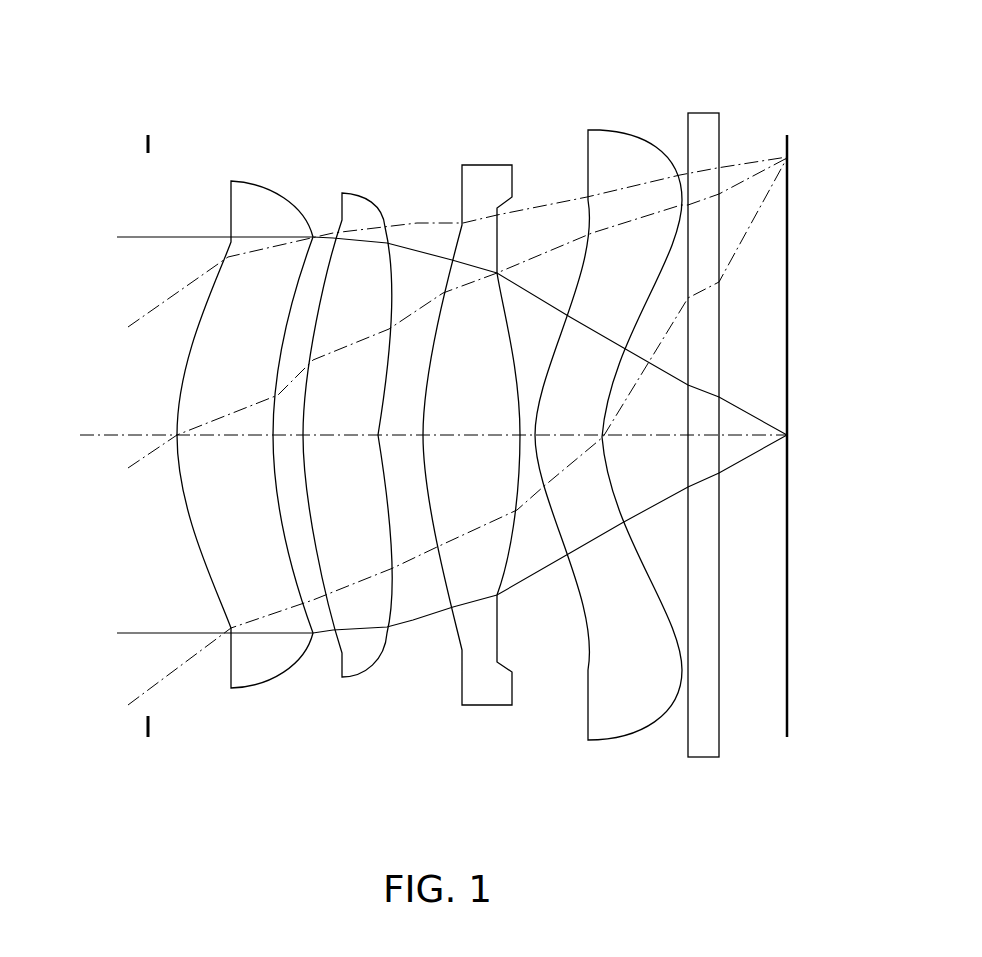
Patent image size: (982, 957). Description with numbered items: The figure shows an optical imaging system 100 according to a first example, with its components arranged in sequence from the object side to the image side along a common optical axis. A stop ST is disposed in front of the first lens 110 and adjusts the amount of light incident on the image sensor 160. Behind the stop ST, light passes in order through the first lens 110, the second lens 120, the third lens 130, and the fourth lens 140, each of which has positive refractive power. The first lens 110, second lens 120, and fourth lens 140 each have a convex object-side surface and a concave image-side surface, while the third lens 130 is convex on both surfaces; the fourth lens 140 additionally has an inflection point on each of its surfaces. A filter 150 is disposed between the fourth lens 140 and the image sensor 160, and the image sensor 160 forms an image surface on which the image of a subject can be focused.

The optical imaging system 100 is at (441, 96).
The stop ST is at (150, 146).
The first lens 110 is at (262, 684).
The second lens 120 is at (363, 679).
The third lens 130 is at (487, 708).
The fourth lens 140 is at (603, 743).
The filter 150 is at (705, 760).
The image sensor 160 is at (786, 726).